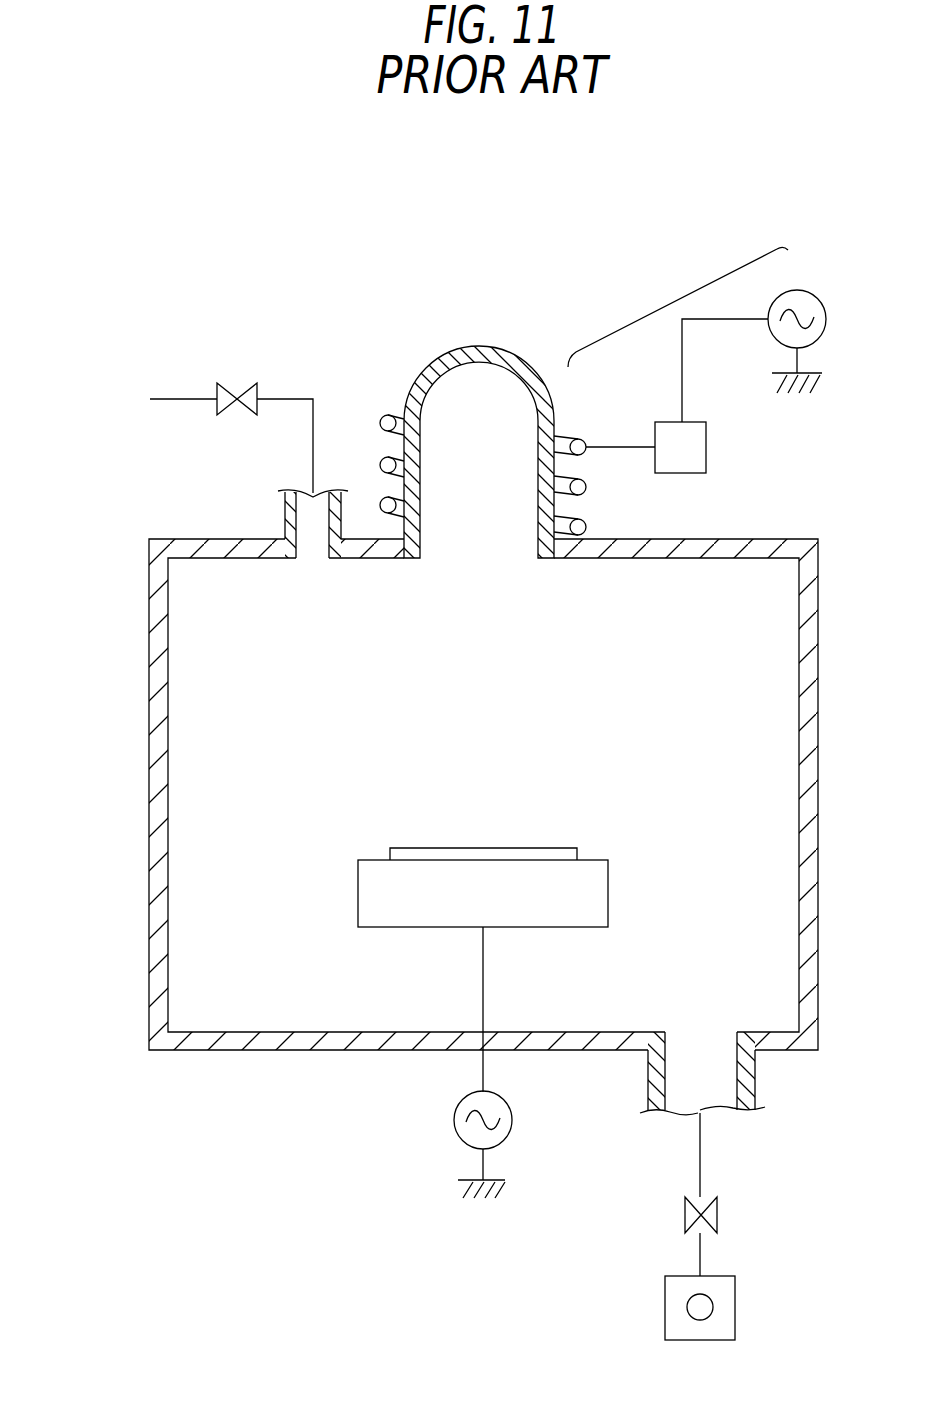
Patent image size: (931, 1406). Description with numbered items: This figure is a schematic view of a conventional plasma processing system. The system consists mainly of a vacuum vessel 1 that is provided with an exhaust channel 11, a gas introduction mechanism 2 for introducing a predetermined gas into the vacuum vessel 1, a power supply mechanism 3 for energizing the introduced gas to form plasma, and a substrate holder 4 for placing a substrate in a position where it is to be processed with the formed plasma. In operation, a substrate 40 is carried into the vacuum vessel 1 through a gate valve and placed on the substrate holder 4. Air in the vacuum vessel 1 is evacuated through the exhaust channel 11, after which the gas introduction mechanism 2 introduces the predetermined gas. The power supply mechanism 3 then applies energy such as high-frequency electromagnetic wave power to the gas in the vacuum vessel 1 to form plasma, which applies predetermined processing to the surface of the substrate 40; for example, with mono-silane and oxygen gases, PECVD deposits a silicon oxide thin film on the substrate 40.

The vacuum vessel 1 is at (278, 1052).
The gas introduction mechanism 2 is at (180, 398).
The power supply mechanism 3 is at (666, 284).
The substrate holder 4 is at (375, 915).
The substrate 40 is at (557, 855).
The exhaust channel 11 is at (700, 1153).